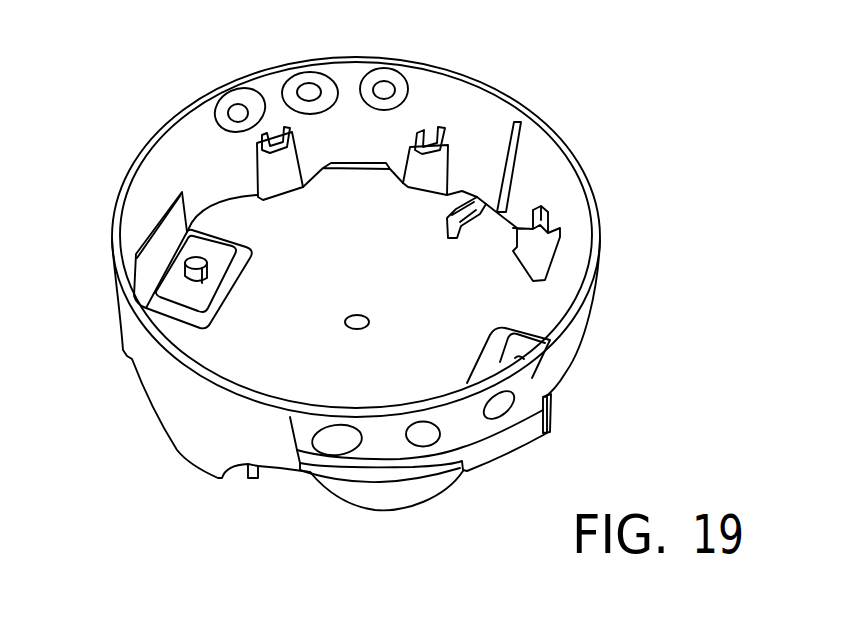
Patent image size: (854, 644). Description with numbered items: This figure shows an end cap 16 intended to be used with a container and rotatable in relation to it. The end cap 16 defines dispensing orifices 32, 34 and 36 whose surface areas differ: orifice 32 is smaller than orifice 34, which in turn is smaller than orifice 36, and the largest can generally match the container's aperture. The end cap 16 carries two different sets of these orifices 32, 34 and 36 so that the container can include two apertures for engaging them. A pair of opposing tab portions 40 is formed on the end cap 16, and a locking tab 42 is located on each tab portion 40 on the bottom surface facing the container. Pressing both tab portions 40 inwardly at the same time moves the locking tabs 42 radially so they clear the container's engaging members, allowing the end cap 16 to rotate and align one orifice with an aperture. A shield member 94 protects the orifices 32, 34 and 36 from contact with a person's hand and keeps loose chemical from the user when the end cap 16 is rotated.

The end cap 16 is at (545, 175).
The orifice 32 is at (238, 112).
The orifice 34 is at (310, 90).
The orifice 36 is at (388, 87).
The tab portion 40 is at (136, 283).
The locking tab 42 is at (193, 277).
The shield member 94 is at (312, 471).